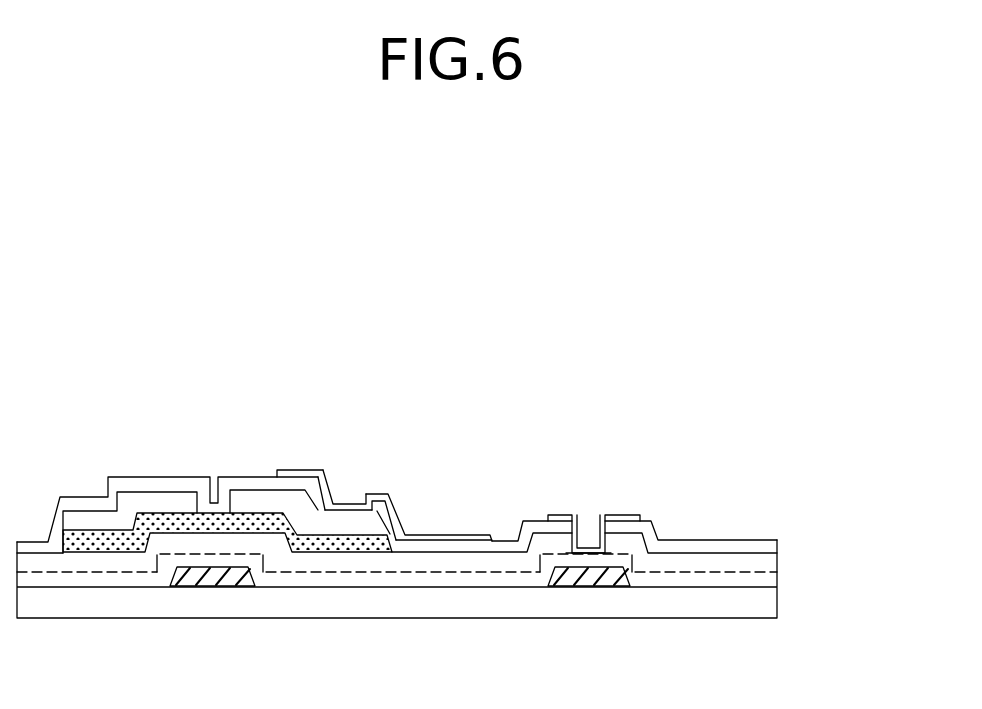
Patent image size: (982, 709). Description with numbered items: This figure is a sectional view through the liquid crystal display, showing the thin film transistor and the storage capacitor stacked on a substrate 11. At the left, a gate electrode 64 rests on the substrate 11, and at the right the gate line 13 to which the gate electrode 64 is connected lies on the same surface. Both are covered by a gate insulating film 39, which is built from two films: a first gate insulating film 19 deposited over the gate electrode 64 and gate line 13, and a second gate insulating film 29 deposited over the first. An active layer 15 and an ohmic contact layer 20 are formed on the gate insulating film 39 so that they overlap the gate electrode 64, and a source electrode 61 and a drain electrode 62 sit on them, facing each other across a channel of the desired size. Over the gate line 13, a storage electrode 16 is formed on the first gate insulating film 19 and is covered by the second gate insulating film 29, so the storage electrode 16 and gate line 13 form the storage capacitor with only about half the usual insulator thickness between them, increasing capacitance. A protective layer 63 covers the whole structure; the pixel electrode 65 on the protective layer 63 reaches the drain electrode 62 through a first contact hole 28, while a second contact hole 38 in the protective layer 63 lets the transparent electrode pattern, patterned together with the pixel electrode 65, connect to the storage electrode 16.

The substrate 11 is at (748, 607).
The gate line 13 is at (578, 588).
The active layer 15 is at (391, 538).
The storage electrode 16 is at (598, 547).
The first gate insulating film 19 is at (768, 580).
The ohmic contact layer 20 is at (391, 500).
The first contact hole 28 is at (357, 487).
The second gate insulating film 29 is at (768, 562).
The second contact hole 38 is at (588, 512).
The gate insulating film 39 is at (466, 569).
The source electrode 61 is at (176, 495).
The drain electrode 62 is at (289, 489).
The protective layer 63 is at (252, 476).
The gate electrode 64 is at (214, 588).
The pixel electrode 65 is at (478, 534).